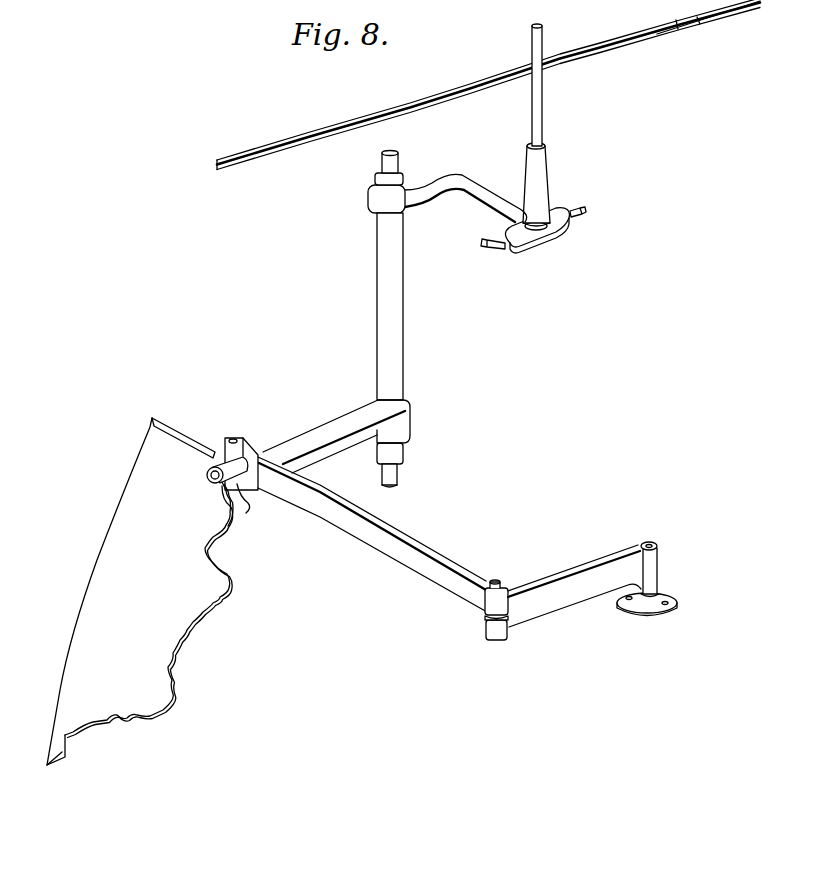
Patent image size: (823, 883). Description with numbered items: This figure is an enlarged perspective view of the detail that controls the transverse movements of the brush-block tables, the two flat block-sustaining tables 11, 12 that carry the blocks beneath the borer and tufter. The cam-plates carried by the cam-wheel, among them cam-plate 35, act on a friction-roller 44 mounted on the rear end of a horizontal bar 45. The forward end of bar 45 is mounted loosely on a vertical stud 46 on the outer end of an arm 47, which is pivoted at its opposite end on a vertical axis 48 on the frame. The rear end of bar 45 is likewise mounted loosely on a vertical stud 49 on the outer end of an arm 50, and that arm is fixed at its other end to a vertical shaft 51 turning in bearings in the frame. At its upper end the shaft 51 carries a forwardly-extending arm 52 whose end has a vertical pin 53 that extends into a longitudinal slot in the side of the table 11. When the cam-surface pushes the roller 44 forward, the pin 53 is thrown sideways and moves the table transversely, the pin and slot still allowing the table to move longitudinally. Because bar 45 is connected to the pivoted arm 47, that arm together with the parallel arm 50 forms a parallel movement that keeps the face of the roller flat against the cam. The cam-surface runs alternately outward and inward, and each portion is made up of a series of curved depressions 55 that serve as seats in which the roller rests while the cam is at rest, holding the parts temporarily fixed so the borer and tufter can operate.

The block-sustaining table 11 is at (353, 120).
The block-sustaining table 12 is at (749, 1).
The segmental cam-plate 35 is at (131, 591).
The friction-roller 44 is at (208, 467).
The horizontal bar 45 is at (360, 540).
The vertical stud 46 is at (501, 581).
The arm 47 is at (558, 608).
The vertical axis 48 is at (652, 542).
The vertical stud 49 is at (235, 437).
The arm 50 is at (326, 424).
The vertical shaft 51 is at (400, 288).
The forwardly-extending arm 52 is at (474, 203).
The vertical pin 53 is at (540, 113).
The curved depressions 55 is at (221, 524).